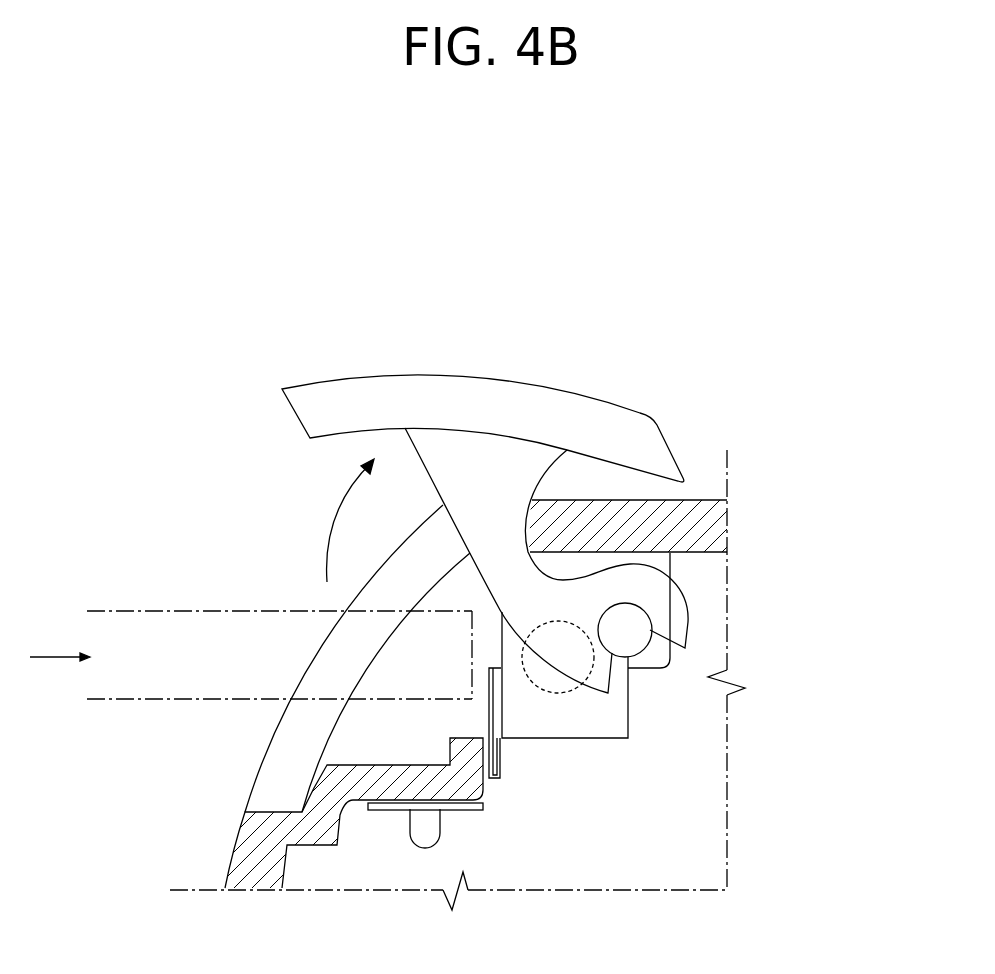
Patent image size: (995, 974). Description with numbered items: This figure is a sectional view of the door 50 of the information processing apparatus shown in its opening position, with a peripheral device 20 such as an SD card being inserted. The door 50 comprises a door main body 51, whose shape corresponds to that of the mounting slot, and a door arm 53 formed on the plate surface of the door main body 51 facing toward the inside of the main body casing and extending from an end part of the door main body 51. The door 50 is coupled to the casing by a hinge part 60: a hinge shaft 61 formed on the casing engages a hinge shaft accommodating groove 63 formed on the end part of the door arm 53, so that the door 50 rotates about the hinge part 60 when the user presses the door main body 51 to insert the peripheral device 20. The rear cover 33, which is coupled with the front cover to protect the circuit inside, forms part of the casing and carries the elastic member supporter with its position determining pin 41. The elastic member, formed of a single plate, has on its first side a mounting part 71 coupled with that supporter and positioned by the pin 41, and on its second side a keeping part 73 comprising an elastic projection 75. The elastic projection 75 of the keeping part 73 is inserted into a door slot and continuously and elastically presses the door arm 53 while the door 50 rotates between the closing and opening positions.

The peripheral device 20 is at (162, 611).
The rear cover 33 is at (262, 873).
The position determining pin 41 is at (428, 850).
The door 50 is at (485, 468).
The door main body 51 is at (412, 393).
The door arm 53 is at (498, 452).
The hinge part 60 is at (742, 610).
The hinge shaft 61 is at (645, 636).
The hinge shaft accommodating groove 63 is at (645, 612).
The mounting part 71 is at (466, 812).
The keeping part 73 is at (605, 736).
The elastic projection 75 is at (593, 663).